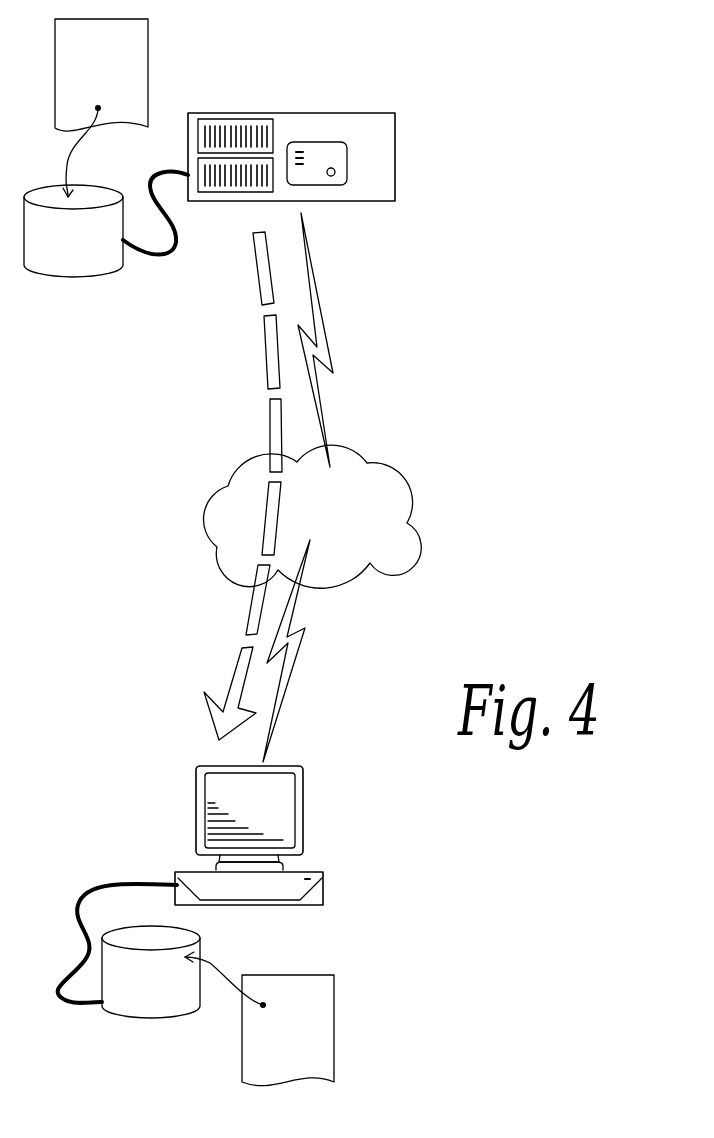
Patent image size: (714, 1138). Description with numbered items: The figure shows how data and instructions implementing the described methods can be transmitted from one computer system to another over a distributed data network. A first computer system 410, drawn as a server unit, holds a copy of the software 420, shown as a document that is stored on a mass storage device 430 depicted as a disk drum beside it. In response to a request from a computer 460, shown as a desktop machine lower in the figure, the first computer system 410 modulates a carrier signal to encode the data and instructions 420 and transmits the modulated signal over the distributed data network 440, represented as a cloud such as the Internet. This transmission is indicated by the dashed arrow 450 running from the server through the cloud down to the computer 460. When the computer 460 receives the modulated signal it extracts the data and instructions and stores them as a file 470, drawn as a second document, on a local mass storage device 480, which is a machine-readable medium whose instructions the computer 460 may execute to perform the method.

The first computer system 410 is at (382, 201).
The software 420 is at (148, 37).
The mass storage device 430 is at (113, 263).
The distributed data network 440 is at (395, 548).
The dashed arrow 450 is at (270, 401).
The computer 460 is at (317, 870).
The file 470 is at (334, 1063).
The local mass storage device 480 is at (192, 1005).